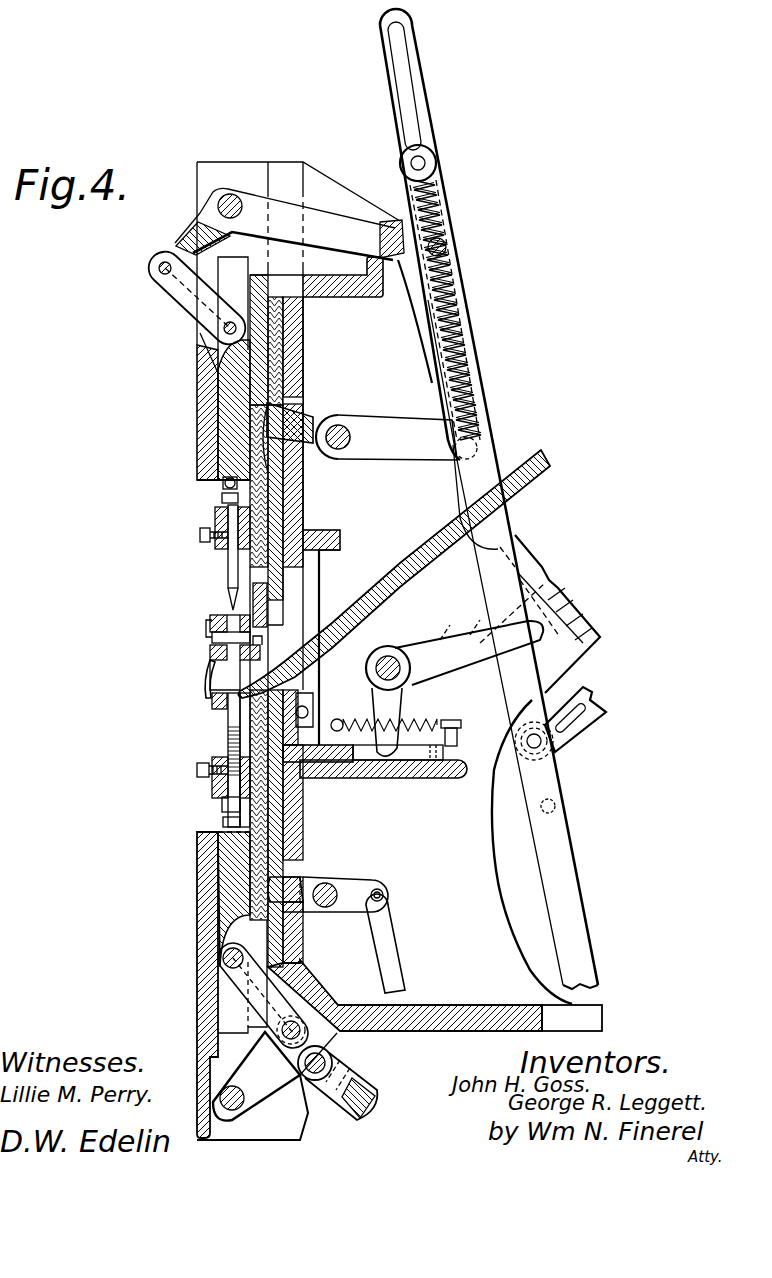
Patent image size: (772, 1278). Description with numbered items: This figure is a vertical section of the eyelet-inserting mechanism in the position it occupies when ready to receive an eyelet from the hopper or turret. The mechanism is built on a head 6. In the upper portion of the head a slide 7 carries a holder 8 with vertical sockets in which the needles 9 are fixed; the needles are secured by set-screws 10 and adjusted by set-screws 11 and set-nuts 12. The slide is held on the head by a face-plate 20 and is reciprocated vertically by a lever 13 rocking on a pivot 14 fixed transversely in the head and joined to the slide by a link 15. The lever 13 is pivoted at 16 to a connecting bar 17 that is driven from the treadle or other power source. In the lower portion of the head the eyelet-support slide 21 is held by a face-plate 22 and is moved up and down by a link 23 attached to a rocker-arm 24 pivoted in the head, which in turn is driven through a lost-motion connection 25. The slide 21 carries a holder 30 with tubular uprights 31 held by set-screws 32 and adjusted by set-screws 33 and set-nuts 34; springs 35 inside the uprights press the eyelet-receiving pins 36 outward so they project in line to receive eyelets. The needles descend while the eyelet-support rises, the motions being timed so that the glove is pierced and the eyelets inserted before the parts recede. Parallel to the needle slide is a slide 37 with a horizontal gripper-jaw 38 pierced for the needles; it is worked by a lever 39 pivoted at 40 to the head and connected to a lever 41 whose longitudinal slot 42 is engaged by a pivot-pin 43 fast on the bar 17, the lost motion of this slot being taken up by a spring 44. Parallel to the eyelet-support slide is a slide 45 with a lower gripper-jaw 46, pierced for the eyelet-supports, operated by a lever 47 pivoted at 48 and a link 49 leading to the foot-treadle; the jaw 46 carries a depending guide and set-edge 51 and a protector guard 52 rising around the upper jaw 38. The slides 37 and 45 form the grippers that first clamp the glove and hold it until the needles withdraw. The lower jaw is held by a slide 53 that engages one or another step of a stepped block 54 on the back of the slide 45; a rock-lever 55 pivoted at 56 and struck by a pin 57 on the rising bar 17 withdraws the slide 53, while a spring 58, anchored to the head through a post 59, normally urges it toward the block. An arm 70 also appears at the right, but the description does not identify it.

The head 6 is at (399, 680).
The slide 7 is at (220, 420).
The holder 8 is at (215, 518).
The needles 9 is at (228, 565).
The set-screws 10 is at (200, 535).
The set-screws 11 is at (224, 483).
The set-nuts 12 is at (222, 499).
The lever 13 is at (205, 221).
The pivot 14 is at (232, 196).
The link 15 is at (186, 296).
The pivot 16 is at (447, 247).
The connecting bar 17 is at (488, 393).
The face-plate 20 is at (194, 373).
The slide 21 is at (220, 864).
The face-plate 22 is at (197, 910).
The link 23 is at (236, 978).
The rocker-arm 24 is at (256, 1076).
The lost-motion connection 25 is at (352, 1068).
The holder 30 is at (212, 785).
The tubular uprights 31 is at (226, 723).
The set-screws 32 is at (197, 770).
The set-screws 33 is at (224, 822).
The set-nuts 34 is at (225, 805).
The springs 35 is at (228, 743).
The eyelet-receiving pins 36 is at (215, 705).
The slide 37 is at (285, 458).
The gripper-jaw 38 is at (225, 615).
The lever 39 is at (396, 428).
The pivot 40 is at (338, 424).
The lever 41 is at (430, 113).
The longitudinal slot 42 is at (406, 67).
The pivot-pin 43 is at (426, 163).
The spring 44 is at (462, 300).
The slide 45 is at (300, 914).
The gripper-jaw 46 is at (213, 648).
The lever 47 is at (296, 886).
The pivot 48 is at (332, 893).
The link 49 is at (396, 940).
The guide and set-edge 51 is at (206, 678).
The protector guard 52 is at (208, 627).
The slide 53 is at (335, 766).
The stepped block 54 is at (305, 707).
The rock-lever 55 is at (396, 722).
The pivot 56 is at (390, 660).
The pin 57 is at (556, 806).
The spring 58 is at (451, 726).
The post 59 is at (338, 719).
The arm 70 is at (604, 717).